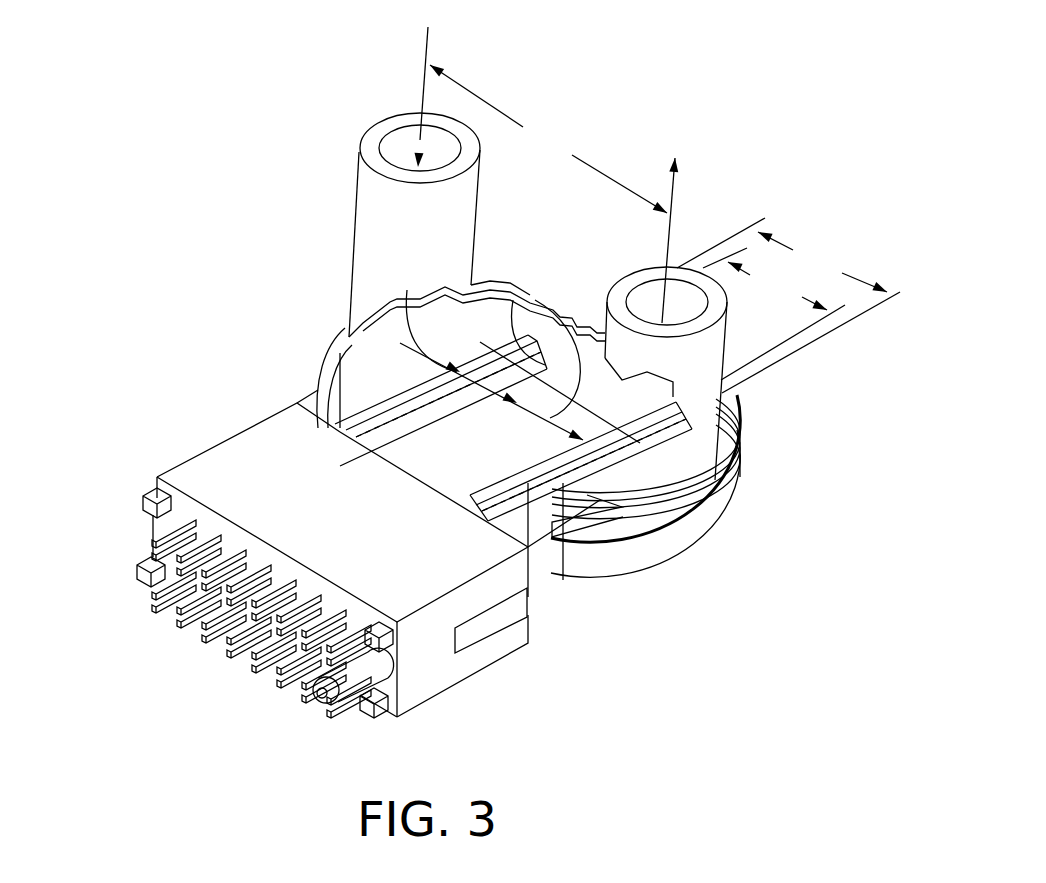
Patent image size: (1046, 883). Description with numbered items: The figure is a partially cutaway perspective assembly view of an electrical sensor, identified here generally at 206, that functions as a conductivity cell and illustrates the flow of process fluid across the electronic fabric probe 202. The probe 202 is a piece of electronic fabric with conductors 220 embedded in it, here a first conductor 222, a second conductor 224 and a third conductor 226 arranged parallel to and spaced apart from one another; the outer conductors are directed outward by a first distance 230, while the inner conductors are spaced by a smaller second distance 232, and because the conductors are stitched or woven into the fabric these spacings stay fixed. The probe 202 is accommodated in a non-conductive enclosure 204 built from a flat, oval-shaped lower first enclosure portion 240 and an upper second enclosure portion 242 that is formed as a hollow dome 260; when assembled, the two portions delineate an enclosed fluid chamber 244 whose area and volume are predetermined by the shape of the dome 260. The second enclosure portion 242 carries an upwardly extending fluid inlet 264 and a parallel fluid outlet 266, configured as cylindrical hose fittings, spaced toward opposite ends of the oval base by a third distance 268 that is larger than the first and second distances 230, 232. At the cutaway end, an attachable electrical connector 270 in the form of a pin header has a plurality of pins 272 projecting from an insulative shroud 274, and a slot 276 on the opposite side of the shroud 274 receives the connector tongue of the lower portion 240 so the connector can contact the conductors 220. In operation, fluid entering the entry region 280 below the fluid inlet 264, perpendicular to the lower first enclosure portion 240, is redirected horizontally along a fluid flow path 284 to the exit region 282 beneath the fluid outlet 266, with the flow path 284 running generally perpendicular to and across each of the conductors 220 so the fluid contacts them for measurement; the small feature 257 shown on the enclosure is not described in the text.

The electronic fabric probe 202 is at (488, 468).
The enclosure 204 is at (330, 363).
The connector assembly 206 is at (262, 204).
The conductors 220 is at (390, 445).
The first conductor 222 is at (513, 320).
The second conductor 224 is at (656, 460).
The third conductor 226 is at (528, 328).
The first distance 230 is at (788, 305).
The second distance 232 is at (774, 314).
The first enclosure portion 240 is at (728, 518).
The second enclosure portion 242 is at (722, 463).
The fluid chamber 244 is at (385, 403).
The slot walls 257 is at (585, 495).
The dome 260 is at (478, 277).
The fluid inlet 264 is at (352, 217).
The fluid outlet 266 is at (722, 402).
The third distance 268 is at (548, 139).
The electrical connector 270 is at (112, 492).
The pins 272 is at (303, 722).
The shroud 274 is at (203, 476).
The slot 276 is at (507, 637).
The entry region 280 is at (403, 321).
The exit region 282 is at (715, 543).
The fluid flow path 284 is at (580, 337).